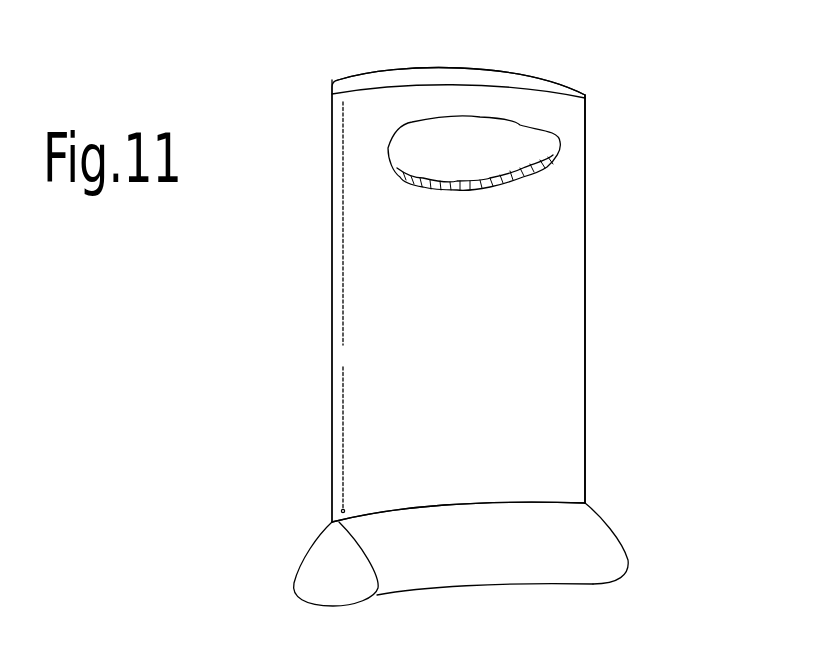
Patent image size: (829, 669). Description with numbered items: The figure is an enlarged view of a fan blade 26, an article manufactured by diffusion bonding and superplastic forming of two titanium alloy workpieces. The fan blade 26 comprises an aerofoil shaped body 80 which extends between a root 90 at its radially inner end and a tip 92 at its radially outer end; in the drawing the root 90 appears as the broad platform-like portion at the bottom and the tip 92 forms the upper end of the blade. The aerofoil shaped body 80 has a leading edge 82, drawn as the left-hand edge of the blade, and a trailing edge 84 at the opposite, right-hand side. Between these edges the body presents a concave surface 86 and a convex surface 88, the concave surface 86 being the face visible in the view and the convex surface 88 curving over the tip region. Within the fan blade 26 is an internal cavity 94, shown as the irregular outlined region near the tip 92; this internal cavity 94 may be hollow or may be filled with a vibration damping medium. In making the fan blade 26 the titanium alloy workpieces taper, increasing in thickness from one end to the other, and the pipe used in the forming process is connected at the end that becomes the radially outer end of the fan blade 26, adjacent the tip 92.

The fan blade 26 is at (557, 218).
The aerofoil shaped body 80 is at (550, 303).
The leading edge 82 is at (332, 332).
The trailing edge 84 is at (585, 383).
The concave surface 86 is at (512, 462).
The convex surface 88 is at (470, 67).
The root 90 is at (583, 548).
The tip 92 is at (550, 98).
The internal cavity 94 is at (393, 137).